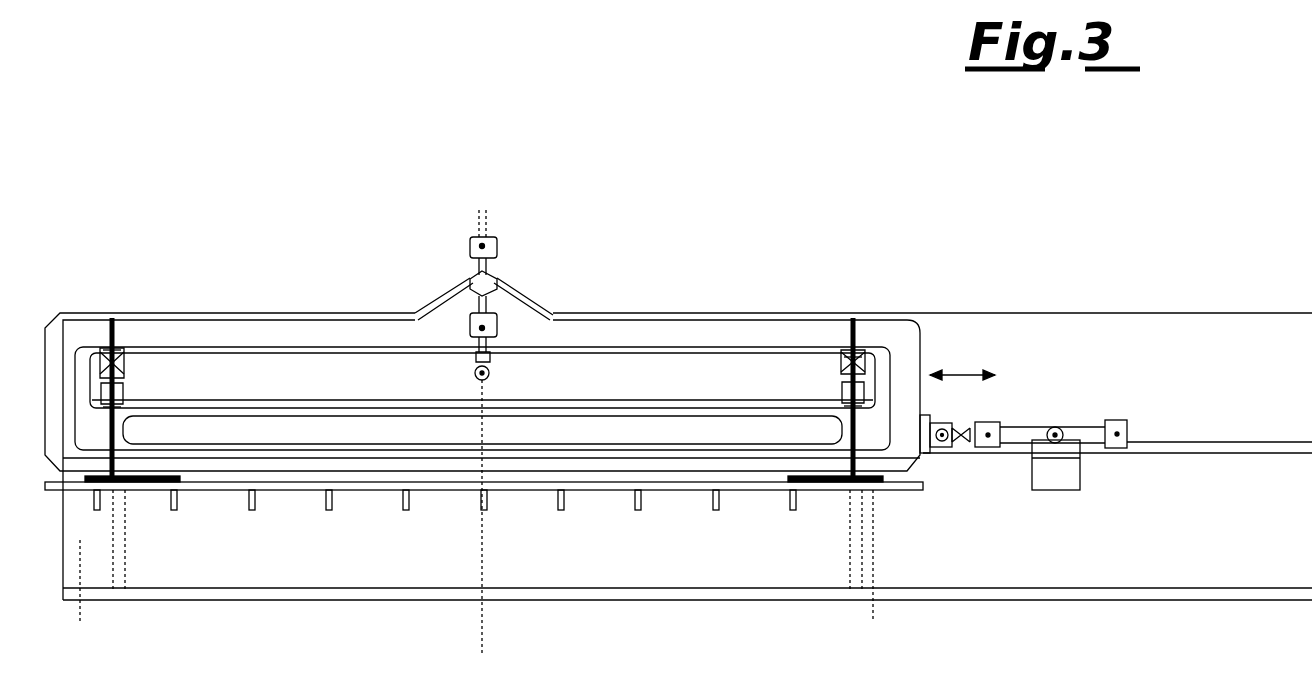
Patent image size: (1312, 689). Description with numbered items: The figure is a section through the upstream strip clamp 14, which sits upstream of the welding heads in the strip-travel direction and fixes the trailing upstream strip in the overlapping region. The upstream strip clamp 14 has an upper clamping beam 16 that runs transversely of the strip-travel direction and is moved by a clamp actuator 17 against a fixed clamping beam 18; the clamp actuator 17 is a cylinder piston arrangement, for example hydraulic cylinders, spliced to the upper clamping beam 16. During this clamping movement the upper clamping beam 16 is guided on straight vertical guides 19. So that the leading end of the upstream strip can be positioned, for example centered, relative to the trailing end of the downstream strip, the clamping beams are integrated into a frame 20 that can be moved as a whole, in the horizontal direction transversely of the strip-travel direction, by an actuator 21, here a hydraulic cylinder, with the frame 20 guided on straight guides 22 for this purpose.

The upstream strip clamp 14 is at (523, 348).
The upper clamping beam 16 is at (567, 402).
The clamp actuator 17 is at (470, 229).
The fixed clamping beam 18 is at (528, 446).
The straight vertical guides 19 is at (105, 325).
The frame 20 is at (905, 338).
The actuator 21 is at (1112, 412).
The straight guides 22 is at (137, 488).